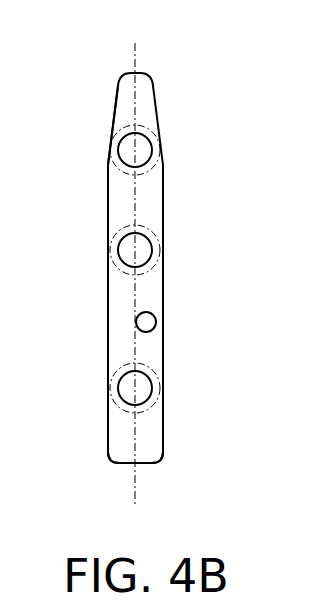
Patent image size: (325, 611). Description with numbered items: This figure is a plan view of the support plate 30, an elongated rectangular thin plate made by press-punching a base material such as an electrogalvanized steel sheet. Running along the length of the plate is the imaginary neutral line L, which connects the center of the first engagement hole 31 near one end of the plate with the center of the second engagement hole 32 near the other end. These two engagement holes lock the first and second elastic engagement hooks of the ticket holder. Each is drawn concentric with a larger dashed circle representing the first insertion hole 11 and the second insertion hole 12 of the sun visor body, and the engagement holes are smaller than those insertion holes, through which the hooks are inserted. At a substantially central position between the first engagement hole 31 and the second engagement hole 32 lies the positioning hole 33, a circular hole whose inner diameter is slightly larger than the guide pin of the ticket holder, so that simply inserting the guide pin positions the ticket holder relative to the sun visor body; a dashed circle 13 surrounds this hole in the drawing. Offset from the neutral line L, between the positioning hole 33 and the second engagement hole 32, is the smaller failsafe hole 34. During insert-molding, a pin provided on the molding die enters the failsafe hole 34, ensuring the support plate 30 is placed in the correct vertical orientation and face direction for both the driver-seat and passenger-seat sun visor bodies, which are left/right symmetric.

The imaginary neutral line L is at (137, 48).
The first insertion hole 11 is at (157, 120).
The second insertion hole 12 is at (150, 410).
The intermediate portion 13 is at (153, 228).
The support plate 30 is at (152, 186).
The first engagement hole 31 is at (122, 150).
The second engagement hole 32 is at (122, 388).
The positioning hole 33 is at (122, 250).
The failsafe hole 34 is at (155, 323).